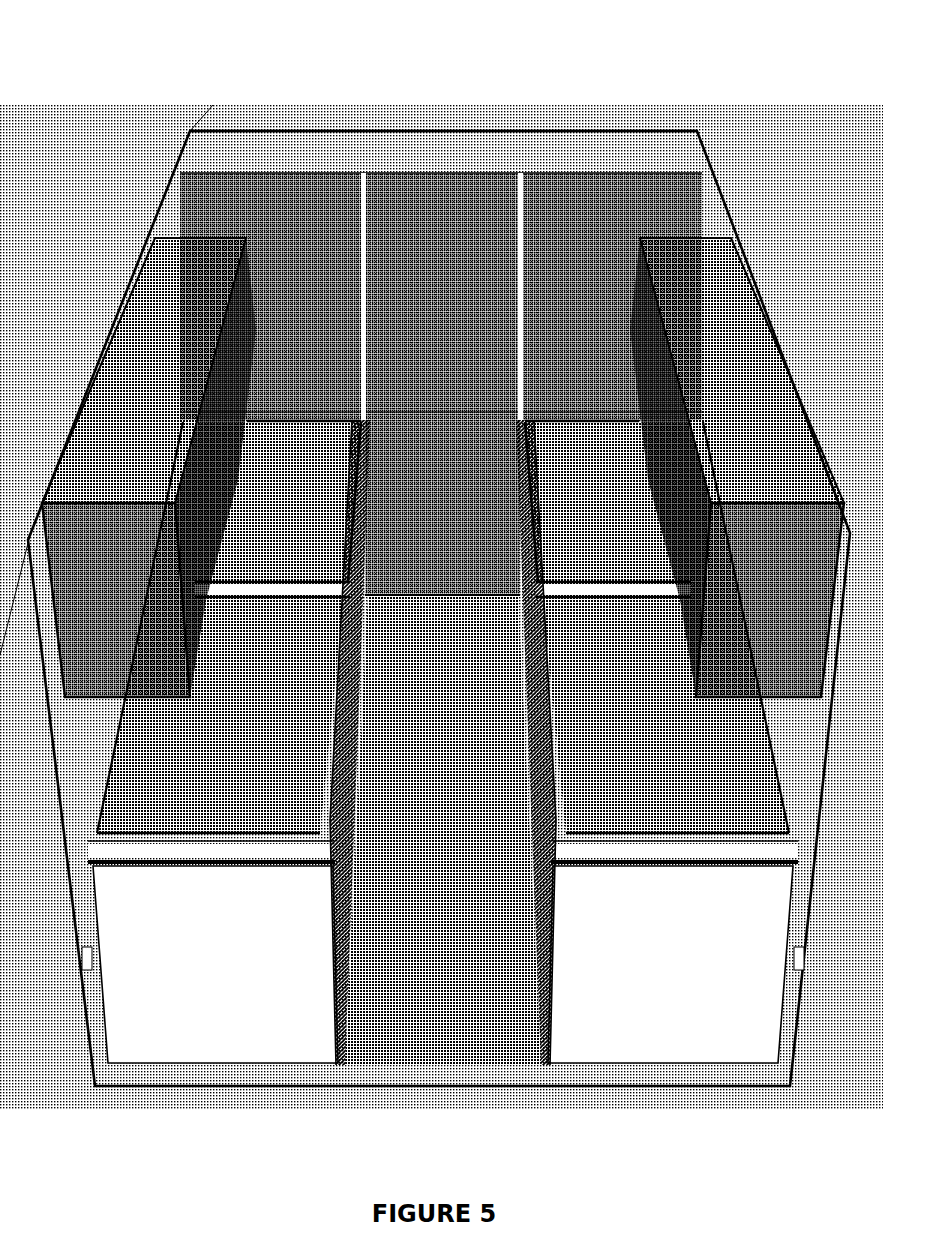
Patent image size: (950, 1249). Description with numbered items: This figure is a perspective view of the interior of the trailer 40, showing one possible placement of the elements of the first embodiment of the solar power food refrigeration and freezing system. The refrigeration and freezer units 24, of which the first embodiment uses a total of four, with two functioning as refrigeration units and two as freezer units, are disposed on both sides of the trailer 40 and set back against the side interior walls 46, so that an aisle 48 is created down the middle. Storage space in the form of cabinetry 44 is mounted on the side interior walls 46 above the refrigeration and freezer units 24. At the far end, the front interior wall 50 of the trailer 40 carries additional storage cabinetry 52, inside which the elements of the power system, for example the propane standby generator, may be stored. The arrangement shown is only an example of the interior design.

The trailer 40 is at (120, 126).
The front interior wall 50 is at (708, 132).
The storage cabinetry 52 is at (449, 190).
The cabinetry 44 is at (147, 322).
The side interior walls 46 is at (90, 755).
The refrigeration and freezer units 24 is at (552, 550).
The aisle 48 is at (458, 1019).